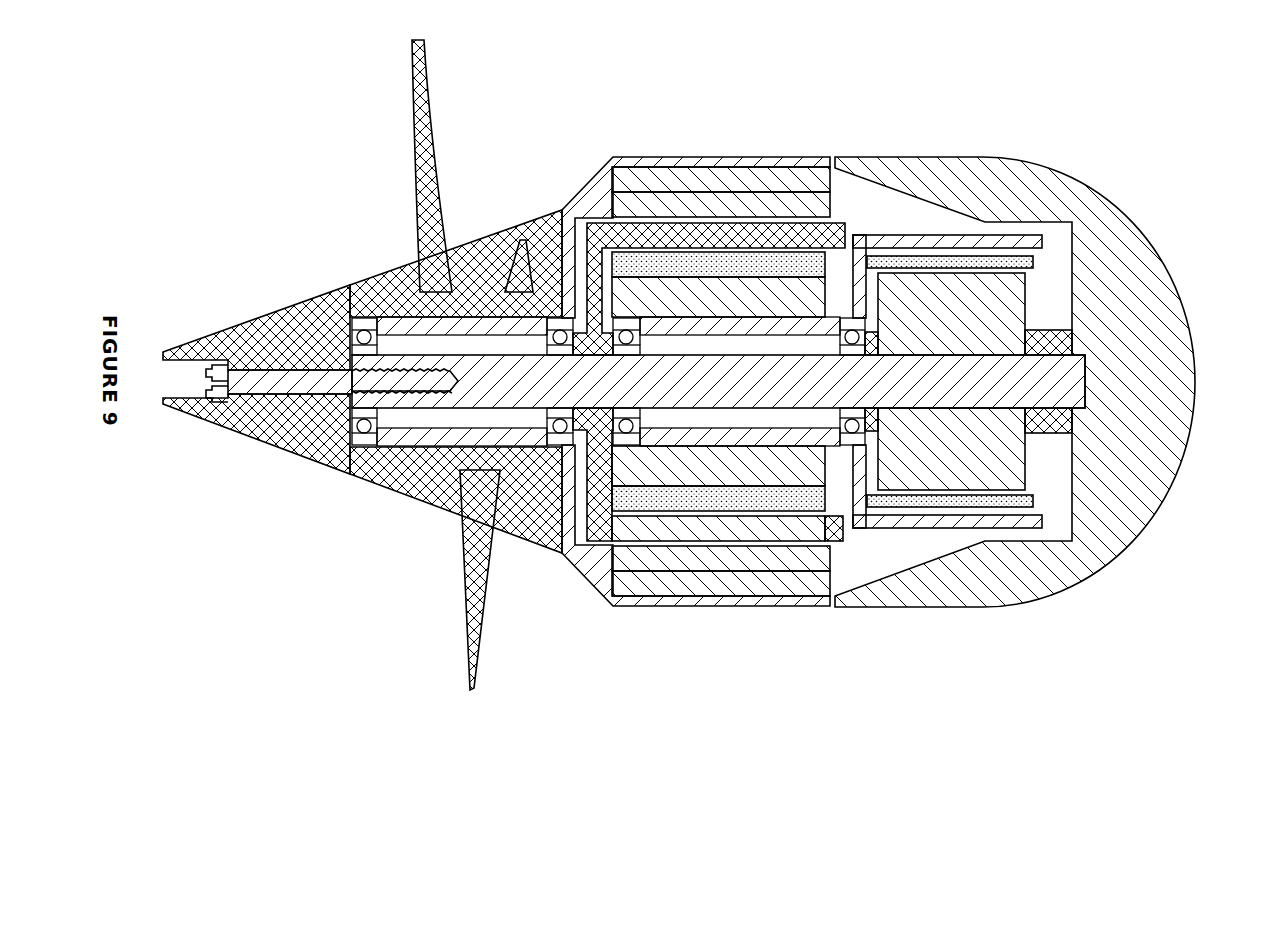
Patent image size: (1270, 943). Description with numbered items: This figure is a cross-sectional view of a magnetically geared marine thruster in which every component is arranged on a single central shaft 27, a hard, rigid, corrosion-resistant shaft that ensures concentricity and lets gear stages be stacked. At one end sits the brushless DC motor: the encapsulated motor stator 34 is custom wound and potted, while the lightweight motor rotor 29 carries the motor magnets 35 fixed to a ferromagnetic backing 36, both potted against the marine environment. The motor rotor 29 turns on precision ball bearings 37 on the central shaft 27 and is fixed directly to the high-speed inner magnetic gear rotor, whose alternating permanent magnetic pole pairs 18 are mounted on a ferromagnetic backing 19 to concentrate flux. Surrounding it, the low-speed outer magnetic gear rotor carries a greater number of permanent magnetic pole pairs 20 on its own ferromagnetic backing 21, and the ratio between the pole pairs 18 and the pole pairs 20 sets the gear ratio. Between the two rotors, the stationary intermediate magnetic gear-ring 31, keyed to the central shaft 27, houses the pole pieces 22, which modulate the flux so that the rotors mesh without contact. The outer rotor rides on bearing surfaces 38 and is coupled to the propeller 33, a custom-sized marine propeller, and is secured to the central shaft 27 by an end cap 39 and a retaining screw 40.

The permanent magnetic pole pairs 18 is at (783, 265).
The ferromagnetic backing 19 is at (734, 297).
The permanent magnetic pole pairs 20 is at (720, 203).
The ferromagnetic backing 21 is at (665, 177).
The pole pieces 22 is at (763, 528).
The central shaft 27 is at (1063, 378).
The motor rotor 29 is at (850, 427).
The intermediate magnetic gear-ring 31 is at (597, 528).
The propeller 33 is at (437, 485).
The motor stator 34 is at (962, 448).
The motor magnets 35 is at (1000, 502).
The ferromagnetic backing 36 is at (970, 512).
The precision ball bearings 37 is at (862, 422).
The bearing surfaces 38 is at (360, 435).
The end cap 39 is at (298, 428).
The retaining screw 40 is at (227, 380).